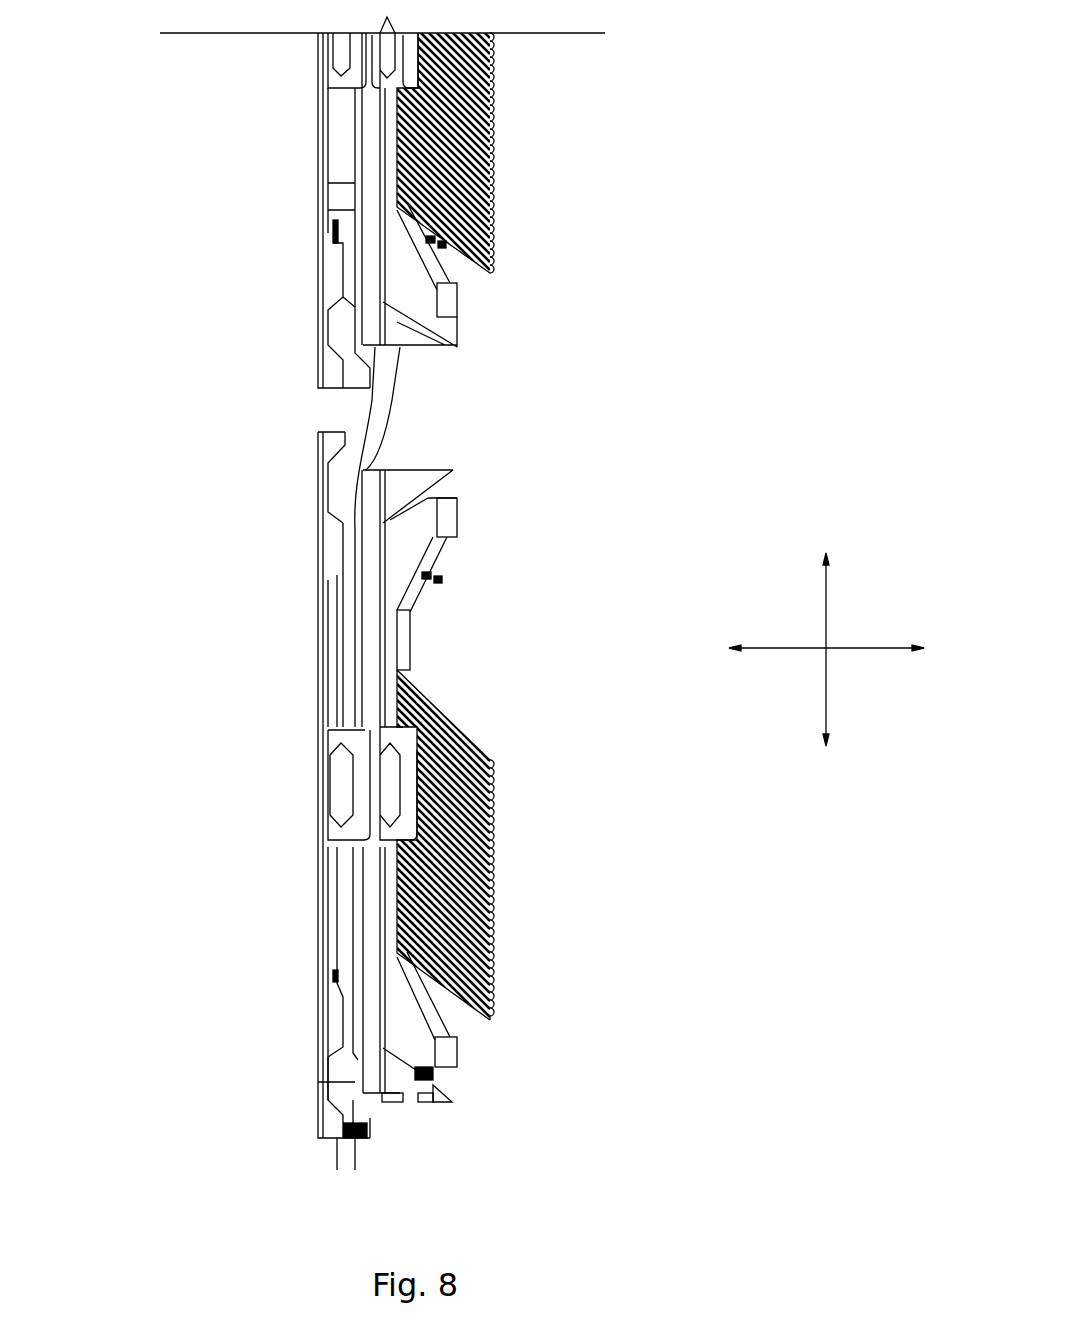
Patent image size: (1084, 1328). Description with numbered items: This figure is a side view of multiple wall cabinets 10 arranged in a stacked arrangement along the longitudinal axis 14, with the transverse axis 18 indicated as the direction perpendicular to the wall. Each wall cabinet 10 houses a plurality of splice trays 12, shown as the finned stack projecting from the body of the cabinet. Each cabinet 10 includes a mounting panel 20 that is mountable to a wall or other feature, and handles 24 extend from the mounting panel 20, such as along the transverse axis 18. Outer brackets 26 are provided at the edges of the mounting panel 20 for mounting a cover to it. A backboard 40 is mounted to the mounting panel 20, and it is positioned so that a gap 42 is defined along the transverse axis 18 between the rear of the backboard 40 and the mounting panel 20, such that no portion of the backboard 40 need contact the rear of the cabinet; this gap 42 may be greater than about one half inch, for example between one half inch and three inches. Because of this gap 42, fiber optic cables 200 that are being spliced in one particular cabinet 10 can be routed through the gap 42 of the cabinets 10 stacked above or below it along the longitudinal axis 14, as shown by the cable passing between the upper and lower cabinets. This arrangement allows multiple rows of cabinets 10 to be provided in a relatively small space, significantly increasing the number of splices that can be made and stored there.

The wall cabinet 10 is at (180, 195).
The splice trays 12 is at (490, 213).
The longitudinal axis 14 is at (826, 603).
The transverse axis 18 is at (873, 650).
The mounting panel 20 is at (308, 191).
The handles 24 is at (336, 80).
The outer brackets 26 is at (329, 272).
The backboard 40 is at (360, 327).
The gap 42 is at (350, 1085).
The fiber optic cables 200 is at (345, 627).